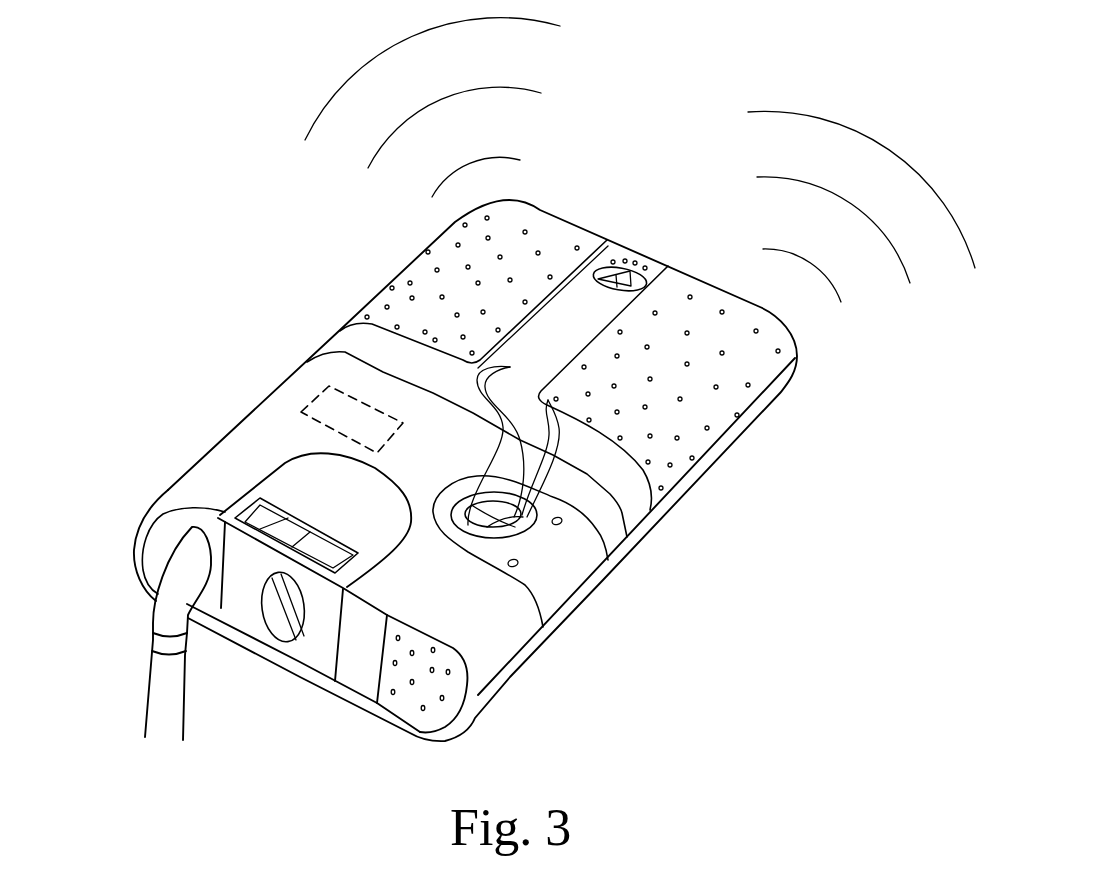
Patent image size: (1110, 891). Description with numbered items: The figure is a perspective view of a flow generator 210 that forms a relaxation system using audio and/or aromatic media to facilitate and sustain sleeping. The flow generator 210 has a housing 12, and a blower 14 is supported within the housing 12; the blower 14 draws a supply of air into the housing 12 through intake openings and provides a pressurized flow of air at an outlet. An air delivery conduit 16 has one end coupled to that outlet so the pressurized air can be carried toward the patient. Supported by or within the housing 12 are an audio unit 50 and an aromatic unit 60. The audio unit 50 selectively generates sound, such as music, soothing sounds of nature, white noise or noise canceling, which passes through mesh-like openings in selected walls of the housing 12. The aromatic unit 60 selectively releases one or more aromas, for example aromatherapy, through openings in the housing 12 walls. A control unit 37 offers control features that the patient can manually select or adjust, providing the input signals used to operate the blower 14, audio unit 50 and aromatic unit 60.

The flow generator 210 is at (96, 403).
The housing 12 is at (263, 428).
The blower 14 is at (312, 383).
The control unit 37 is at (218, 495).
The air delivery conduit 16 is at (157, 660).
The audio unit 50 is at (777, 363).
The aromatic unit 60 is at (498, 560).